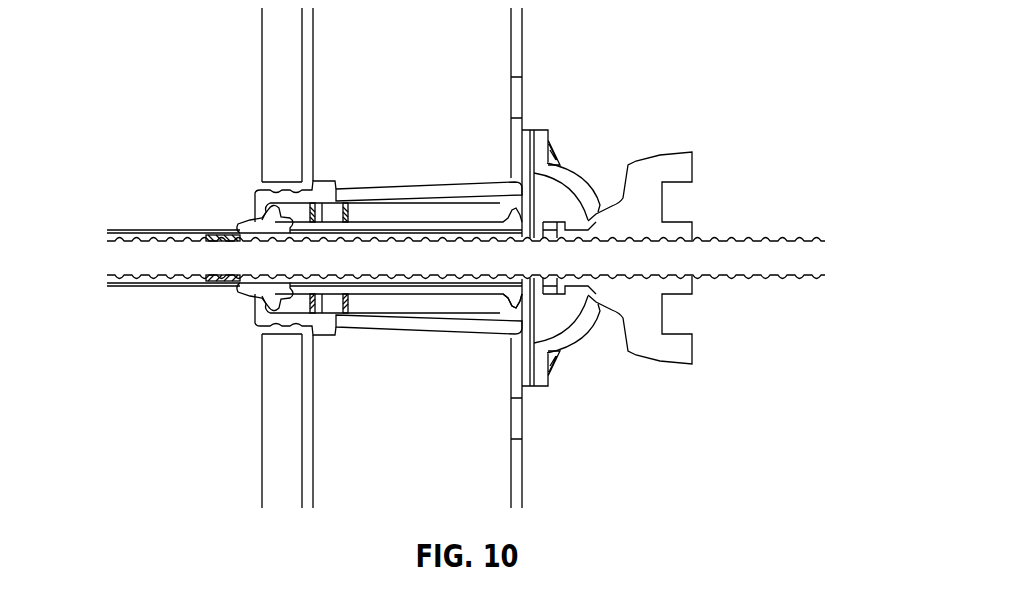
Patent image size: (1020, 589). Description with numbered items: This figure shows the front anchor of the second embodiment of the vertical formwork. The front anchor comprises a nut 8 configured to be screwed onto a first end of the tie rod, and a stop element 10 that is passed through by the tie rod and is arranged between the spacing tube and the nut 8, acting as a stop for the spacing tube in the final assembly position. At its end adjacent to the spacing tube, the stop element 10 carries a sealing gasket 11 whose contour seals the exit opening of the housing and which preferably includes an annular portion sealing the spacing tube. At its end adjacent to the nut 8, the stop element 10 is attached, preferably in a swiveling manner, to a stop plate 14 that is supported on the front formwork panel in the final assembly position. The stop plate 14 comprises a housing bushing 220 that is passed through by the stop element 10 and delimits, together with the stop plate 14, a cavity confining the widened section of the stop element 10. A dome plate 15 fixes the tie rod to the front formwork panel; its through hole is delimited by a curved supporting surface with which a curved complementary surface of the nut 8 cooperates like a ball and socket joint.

The nut 8 is at (648, 177).
The stop element 10 is at (468, 230).
The sealing gasket 11 is at (248, 218).
The stop plate 14 is at (524, 128).
The dome plate 15 is at (566, 163).
The housing bushing 220 is at (505, 312).